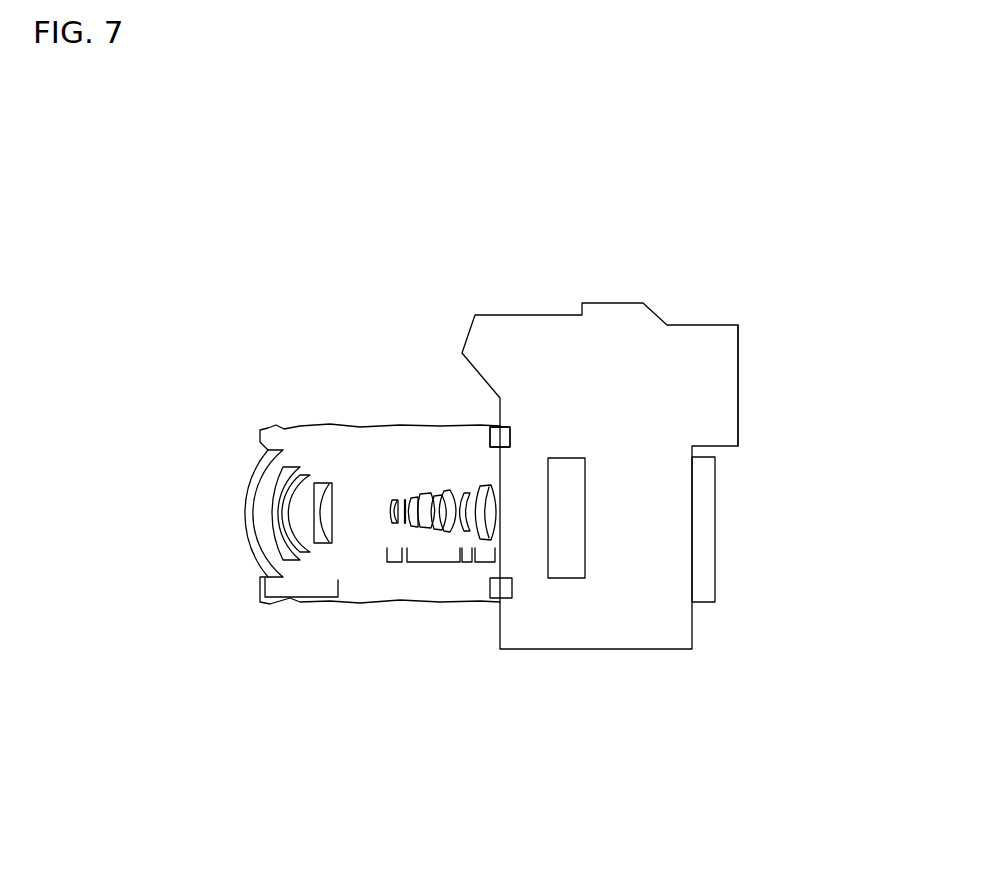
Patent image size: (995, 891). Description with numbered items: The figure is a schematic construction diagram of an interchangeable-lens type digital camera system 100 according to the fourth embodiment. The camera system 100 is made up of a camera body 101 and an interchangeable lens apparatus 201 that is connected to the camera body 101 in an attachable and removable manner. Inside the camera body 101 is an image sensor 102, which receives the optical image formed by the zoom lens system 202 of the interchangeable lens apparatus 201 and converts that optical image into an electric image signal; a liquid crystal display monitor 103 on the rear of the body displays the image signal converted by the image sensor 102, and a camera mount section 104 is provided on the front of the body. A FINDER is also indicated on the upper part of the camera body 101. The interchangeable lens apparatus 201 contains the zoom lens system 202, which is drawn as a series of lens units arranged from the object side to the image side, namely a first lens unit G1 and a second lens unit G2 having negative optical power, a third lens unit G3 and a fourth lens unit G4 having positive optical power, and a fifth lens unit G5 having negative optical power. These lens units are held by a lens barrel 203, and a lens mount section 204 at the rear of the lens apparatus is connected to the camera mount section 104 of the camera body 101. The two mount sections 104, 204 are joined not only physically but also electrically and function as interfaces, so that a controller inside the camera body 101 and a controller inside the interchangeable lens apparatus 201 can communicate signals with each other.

The interchangeable-lens type digital camera system 100 is at (243, 267).
The camera body 101 is at (611, 324).
The image sensor 102 is at (576, 590).
The liquid crystal display monitor 103 is at (712, 592).
The camera mount section 104 is at (512, 410).
The interchangeable lens apparatus 201 is at (238, 427).
The zoom lens system 202 is at (502, 737).
The lens barrel 203 is at (376, 413).
The lens mount section 204 is at (482, 416).
The first lens unit G1 is at (275, 613).
The second lens unit G2 is at (389, 590).
The third lens unit G3 is at (434, 590).
The fourth lens unit G4 is at (462, 590).
The fifth lens unit G5 is at (484, 590).
The finder FINDER is at (755, 377).